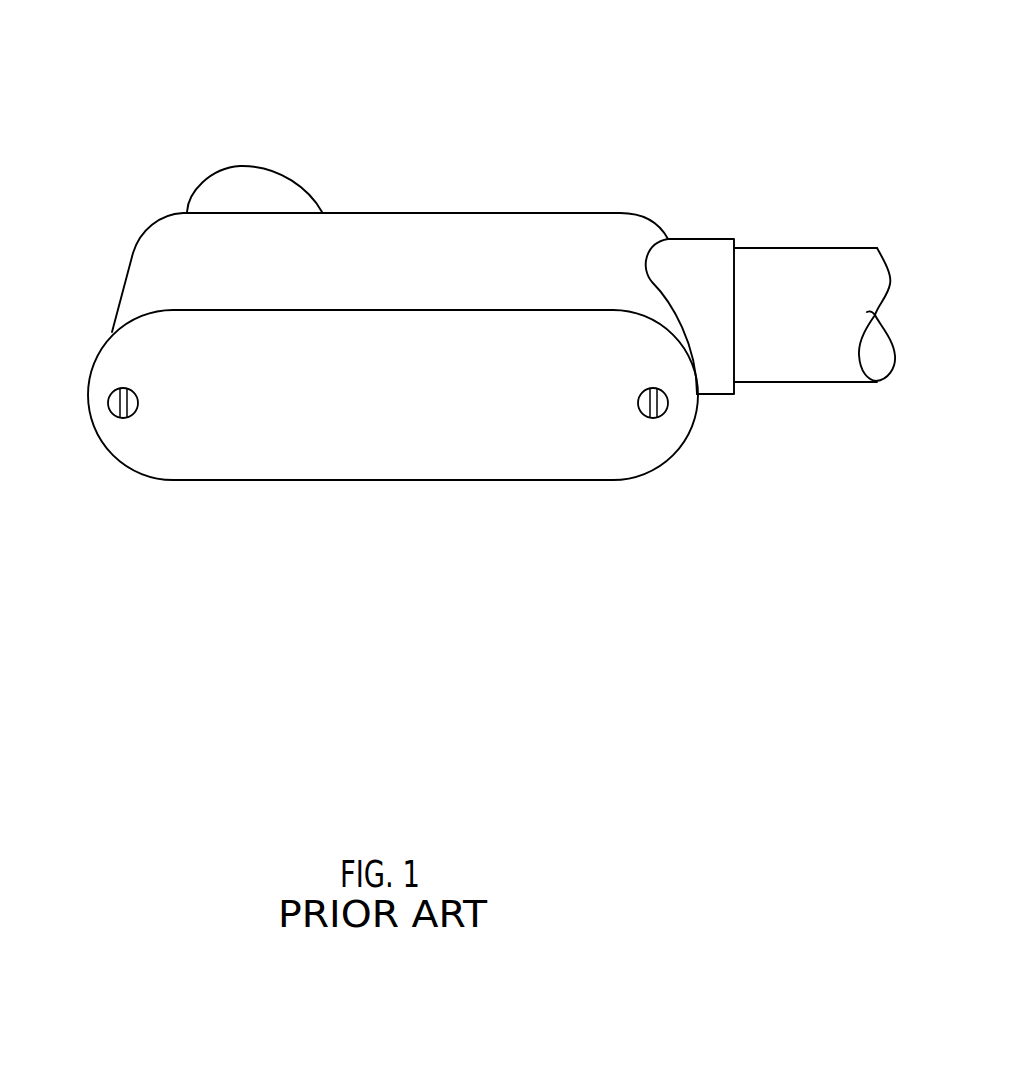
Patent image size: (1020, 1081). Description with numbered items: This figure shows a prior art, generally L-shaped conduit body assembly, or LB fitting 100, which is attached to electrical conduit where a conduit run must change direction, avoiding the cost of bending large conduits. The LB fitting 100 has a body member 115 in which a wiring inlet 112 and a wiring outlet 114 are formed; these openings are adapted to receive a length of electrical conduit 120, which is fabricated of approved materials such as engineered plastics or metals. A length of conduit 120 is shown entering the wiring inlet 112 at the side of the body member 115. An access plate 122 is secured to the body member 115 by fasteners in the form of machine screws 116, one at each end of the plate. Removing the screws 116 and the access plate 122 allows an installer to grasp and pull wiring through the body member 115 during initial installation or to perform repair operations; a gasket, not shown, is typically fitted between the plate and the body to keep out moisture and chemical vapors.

The LB fitting 100 is at (424, 108).
The wiring inlet 112 is at (695, 238).
The wiring outlet 114 is at (220, 165).
The body member 115 is at (428, 277).
The machine screws 116 is at (112, 412).
The electrical conduit 120 is at (808, 247).
The access plate 122 is at (415, 418).